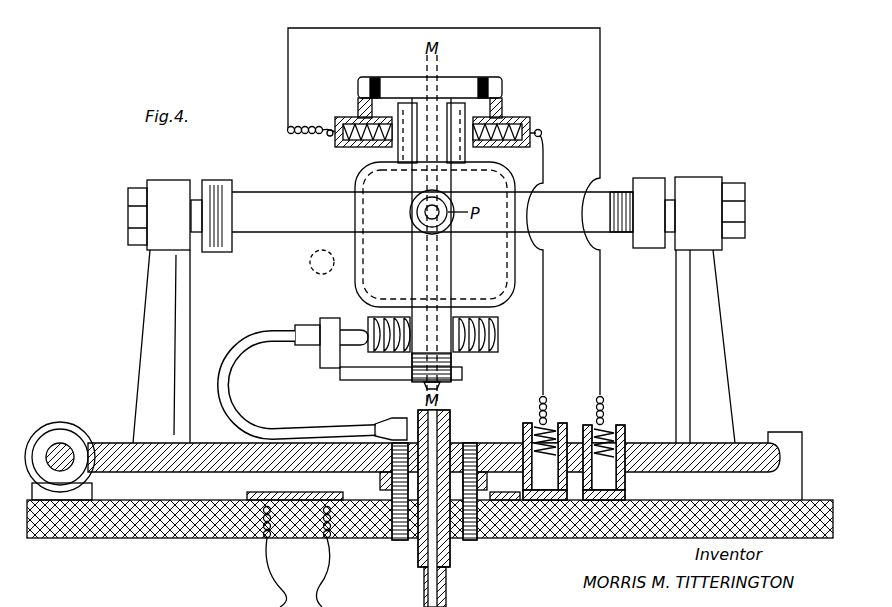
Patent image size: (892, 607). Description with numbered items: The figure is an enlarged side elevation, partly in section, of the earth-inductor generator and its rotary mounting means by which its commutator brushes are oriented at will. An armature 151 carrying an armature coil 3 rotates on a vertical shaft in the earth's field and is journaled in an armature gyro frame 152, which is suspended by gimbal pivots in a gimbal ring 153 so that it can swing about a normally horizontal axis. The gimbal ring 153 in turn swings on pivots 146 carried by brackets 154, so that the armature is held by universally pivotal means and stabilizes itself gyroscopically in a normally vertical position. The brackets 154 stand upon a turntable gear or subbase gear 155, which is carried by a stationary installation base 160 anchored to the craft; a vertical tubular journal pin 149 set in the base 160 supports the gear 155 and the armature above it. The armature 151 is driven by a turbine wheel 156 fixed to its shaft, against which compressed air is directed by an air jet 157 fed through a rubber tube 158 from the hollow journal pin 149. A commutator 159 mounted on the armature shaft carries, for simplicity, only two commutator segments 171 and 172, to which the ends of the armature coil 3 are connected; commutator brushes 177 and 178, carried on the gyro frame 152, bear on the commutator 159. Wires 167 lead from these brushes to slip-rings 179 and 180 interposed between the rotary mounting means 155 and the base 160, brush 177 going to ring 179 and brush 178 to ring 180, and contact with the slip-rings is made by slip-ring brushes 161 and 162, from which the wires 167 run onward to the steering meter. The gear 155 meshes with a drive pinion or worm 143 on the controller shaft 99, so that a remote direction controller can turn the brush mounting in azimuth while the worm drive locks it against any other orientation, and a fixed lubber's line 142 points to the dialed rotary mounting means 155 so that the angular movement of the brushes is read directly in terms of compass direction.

The armature coil 3 is at (368, 265).
The controller shaft 99 is at (59, 446).
The lubber's line 142 is at (788, 432).
The drive pinion or worm 143 is at (74, 438).
The pivots 146 is at (198, 212).
The journal pin 149 is at (424, 588).
The armature 151 is at (378, 183).
The armature gyro frame 152 is at (420, 77).
The gimbal ring 153 is at (267, 226).
The brackets 154 is at (146, 331).
The turntable gear or subbase gear 155 is at (146, 462).
The turbine wheel 156 is at (498, 348).
The air jet 157 is at (350, 356).
The rubber tube 158 is at (228, 384).
The commutator 159 is at (444, 77).
The stationary installation base 160 is at (147, 532).
The slip-ring brush 161 is at (520, 480).
The slip-ring brush 162 is at (625, 478).
The wires 167 is at (600, 305).
The commutator segment 171 is at (385, 78).
The commutator segment 172 is at (465, 78).
The commutator brush 177 is at (498, 118).
The commutator brush 178 is at (380, 118).
The slip-ring 179 is at (548, 540).
The slip-ring 180 is at (604, 540).